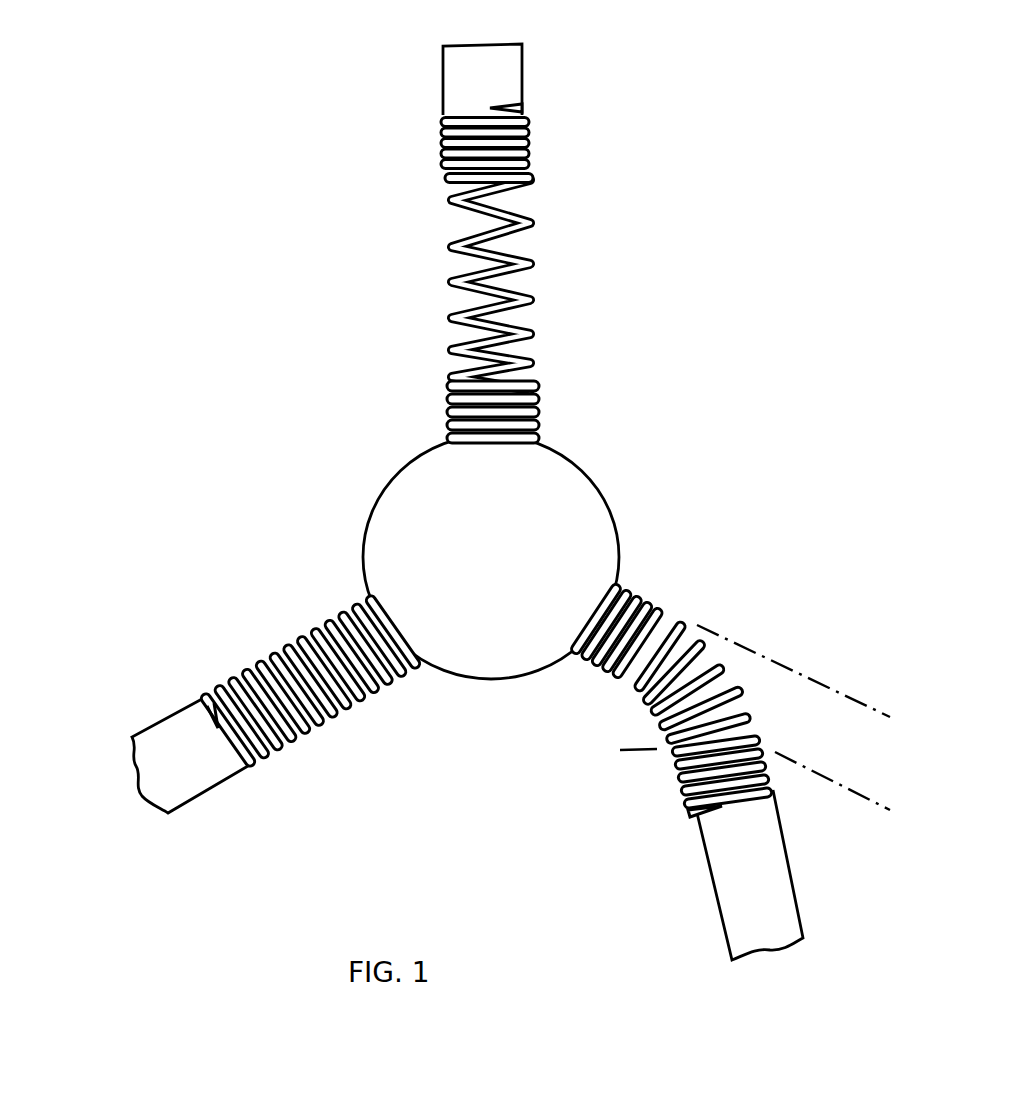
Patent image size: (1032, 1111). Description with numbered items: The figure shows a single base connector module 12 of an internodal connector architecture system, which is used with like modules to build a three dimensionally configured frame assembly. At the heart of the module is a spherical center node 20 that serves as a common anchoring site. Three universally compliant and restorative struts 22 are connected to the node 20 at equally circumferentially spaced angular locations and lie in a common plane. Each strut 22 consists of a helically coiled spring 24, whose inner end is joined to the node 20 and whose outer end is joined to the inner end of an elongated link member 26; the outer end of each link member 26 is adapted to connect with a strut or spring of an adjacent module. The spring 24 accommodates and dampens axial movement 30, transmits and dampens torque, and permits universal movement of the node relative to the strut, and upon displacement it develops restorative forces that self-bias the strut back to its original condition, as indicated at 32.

The connector module 12 is at (612, 505).
The center node 20 is at (402, 498).
The strut 22 is at (422, 502).
The helically coiled spring 24 is at (535, 304).
The link member 26 is at (442, 80).
The axial movement 30 is at (386, 241).
The restorative self-biasing 32 is at (733, 610).